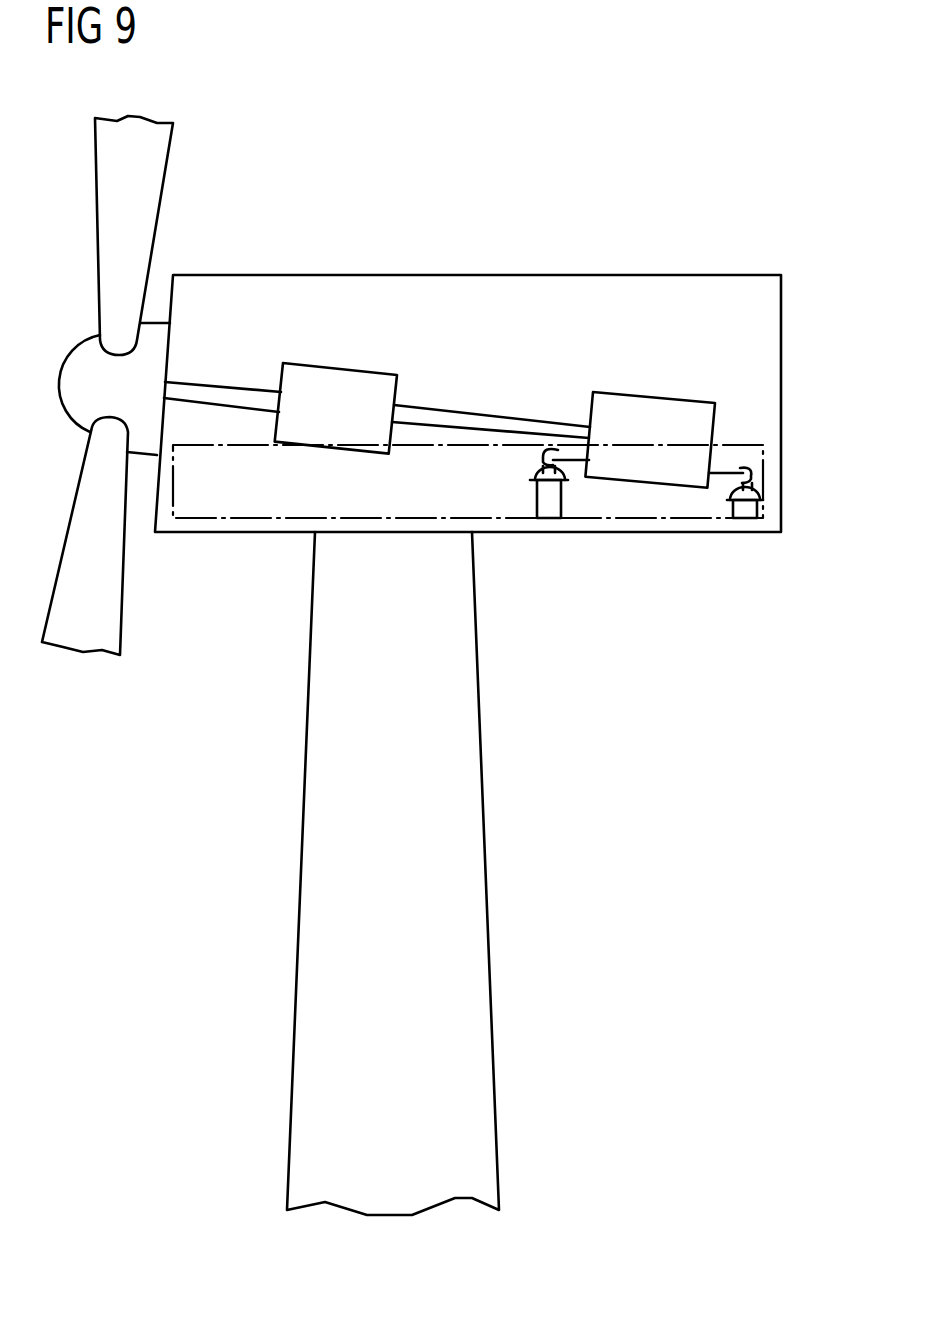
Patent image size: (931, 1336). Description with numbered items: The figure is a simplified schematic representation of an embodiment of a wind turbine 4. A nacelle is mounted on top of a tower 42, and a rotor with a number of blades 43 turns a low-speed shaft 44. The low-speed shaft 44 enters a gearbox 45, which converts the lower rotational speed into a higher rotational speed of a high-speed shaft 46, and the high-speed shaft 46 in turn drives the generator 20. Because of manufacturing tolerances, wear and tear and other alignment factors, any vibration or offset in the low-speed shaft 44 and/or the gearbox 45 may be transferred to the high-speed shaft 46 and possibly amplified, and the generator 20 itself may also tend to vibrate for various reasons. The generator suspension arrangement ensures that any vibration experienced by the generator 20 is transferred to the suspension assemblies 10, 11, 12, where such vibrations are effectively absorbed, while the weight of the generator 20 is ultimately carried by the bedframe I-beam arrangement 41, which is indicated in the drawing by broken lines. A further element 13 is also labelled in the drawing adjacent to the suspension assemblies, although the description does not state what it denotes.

The wind turbine 4 is at (685, 215).
The suspension assembly 10 is at (742, 467).
The suspension assembly 11 is at (540, 456).
The suspension assembly 12 is at (535, 475).
The extinguishing agent container 13 is at (555, 503).
The generator 20 is at (657, 408).
The bedframe I-beam arrangement 41 is at (765, 478).
The tower 42 is at (467, 773).
The blade 43 is at (153, 170).
The low-speed shaft 44 is at (217, 395).
The gearbox 45 is at (345, 375).
The high-speed shaft 46 is at (470, 418).